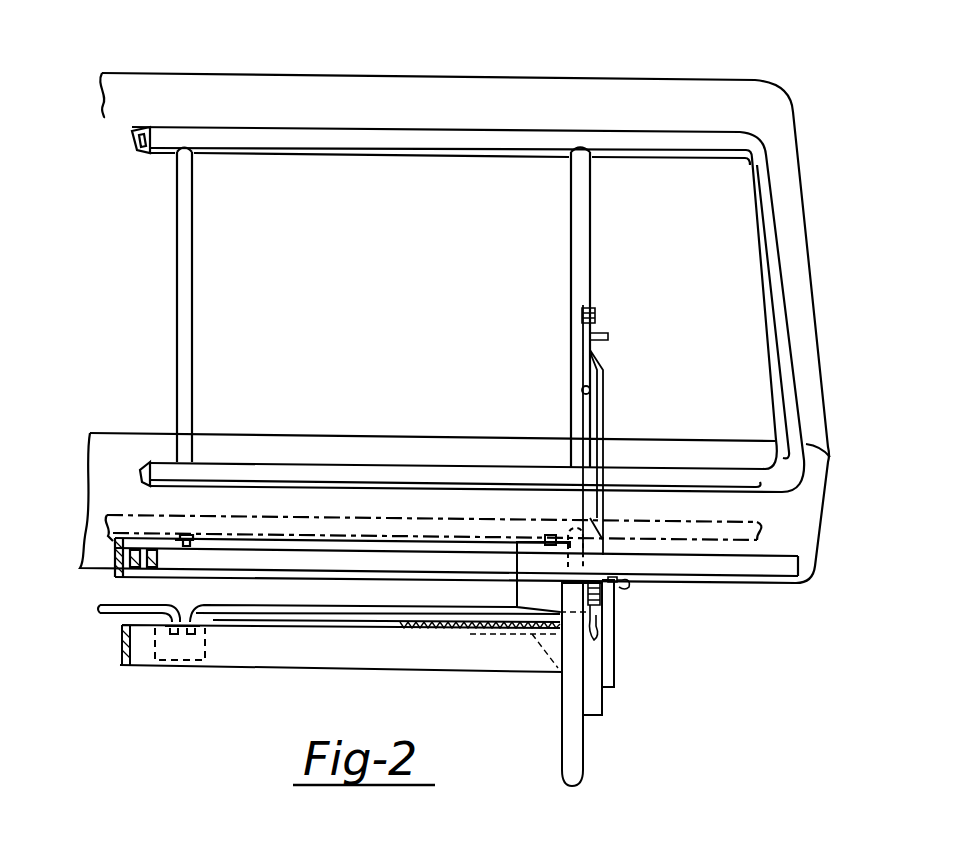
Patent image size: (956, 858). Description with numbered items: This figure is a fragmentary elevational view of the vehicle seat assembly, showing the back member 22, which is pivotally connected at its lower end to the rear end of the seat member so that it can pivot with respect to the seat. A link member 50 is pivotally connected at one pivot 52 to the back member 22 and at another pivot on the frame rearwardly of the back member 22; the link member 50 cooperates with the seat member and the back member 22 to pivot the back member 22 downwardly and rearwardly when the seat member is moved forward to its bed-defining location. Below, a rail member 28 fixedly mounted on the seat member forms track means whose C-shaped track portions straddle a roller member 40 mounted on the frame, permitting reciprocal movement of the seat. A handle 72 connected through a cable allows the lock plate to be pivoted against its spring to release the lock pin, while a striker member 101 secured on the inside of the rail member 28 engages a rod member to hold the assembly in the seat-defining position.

The back member 22 is at (550, 77).
The pivot 52 is at (600, 317).
The link member 50 is at (603, 400).
The handle 72 is at (628, 586).
The roller member 40 is at (603, 607).
The striker member 101 is at (598, 653).
The rail member 28 is at (603, 617).